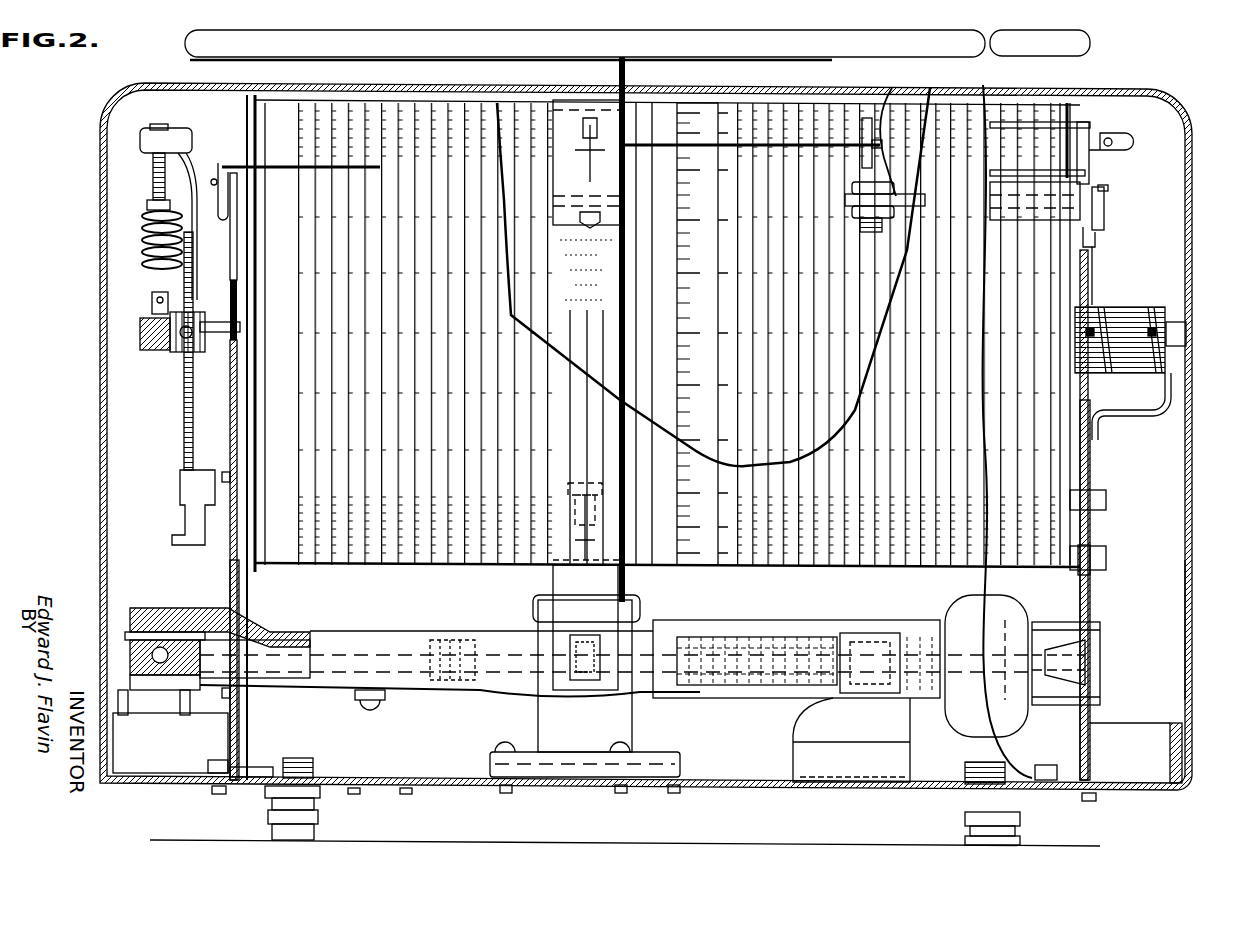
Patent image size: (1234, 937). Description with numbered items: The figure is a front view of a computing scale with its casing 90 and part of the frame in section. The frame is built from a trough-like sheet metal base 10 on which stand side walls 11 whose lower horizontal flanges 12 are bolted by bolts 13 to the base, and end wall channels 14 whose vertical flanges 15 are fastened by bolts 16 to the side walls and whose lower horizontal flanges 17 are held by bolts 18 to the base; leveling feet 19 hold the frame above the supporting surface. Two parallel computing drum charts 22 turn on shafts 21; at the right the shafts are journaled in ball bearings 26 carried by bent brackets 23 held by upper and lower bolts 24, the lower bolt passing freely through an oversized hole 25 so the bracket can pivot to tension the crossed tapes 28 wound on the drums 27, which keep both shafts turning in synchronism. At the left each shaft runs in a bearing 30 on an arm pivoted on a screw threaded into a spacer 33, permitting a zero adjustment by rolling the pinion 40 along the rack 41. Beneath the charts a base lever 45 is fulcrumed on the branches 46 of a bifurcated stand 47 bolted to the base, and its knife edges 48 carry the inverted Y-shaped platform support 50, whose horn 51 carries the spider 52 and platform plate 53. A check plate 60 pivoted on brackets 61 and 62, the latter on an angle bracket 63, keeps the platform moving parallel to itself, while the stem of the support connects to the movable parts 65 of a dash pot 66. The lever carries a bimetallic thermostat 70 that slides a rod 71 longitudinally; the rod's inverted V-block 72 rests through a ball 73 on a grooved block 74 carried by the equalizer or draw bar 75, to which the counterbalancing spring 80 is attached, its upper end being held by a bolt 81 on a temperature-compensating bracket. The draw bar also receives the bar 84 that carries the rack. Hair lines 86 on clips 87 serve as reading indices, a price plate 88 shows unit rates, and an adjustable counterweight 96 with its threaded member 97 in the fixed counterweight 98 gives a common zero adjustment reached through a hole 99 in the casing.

The base 10 is at (140, 790).
The side walls 11 is at (230, 530).
The horizontal flanges 12 is at (208, 770).
The bolts 13 is at (214, 798).
The end wall channels 14 is at (470, 785).
The vertical flanges 15 is at (242, 720).
The bolts 16 is at (224, 480).
The horizontal flanges 17 is at (365, 794).
The bolts 18 is at (406, 794).
The leveling feet 19 is at (268, 830).
The shafts 21 is at (230, 310).
The computing drum charts 22 is at (275, 120).
The bent brackets 23 is at (1133, 414).
The bolts 24 is at (1100, 555).
The hole 25 is at (1095, 572).
The ball bearings 26 is at (1190, 340).
The drums 27 is at (1152, 307).
The tapes 28 is at (1115, 307).
The bearing 30 is at (150, 350).
The spacer 33 is at (212, 352).
The pinion 40 is at (178, 355).
The rack 41 is at (184, 400).
The base lever 45 is at (740, 700).
The branches 46 is at (905, 695).
The bifurcated stand 47 is at (808, 752).
The knife edges 48 is at (580, 700).
The platform support 50 is at (555, 584).
The horn 51 is at (555, 72).
The spider 52 is at (360, 58).
The platform plate 53 is at (900, 56).
The check plate 60 is at (660, 140).
The bracket 61 is at (605, 110).
The bracket 62 is at (885, 147).
The angle bracket 63 is at (932, 100).
The movable parts of dash pot 65 is at (612, 588).
The dash pot 66 is at (632, 726).
The thermostat 70 is at (760, 637).
The rod 71 is at (290, 645).
The inverted V-block 72 is at (130, 620).
The ball 73 is at (130, 662).
The block 74 is at (130, 670).
The equalizer or draw bar 75 is at (130, 645).
The counterbalancing spring 80 is at (155, 265).
The bolt 81 is at (153, 190).
The bar 84 is at (165, 520).
The hair lines 86 is at (260, 166).
The clips 87 is at (220, 212).
The price plate 88 is at (1100, 240).
The casing 90 is at (1183, 625).
The adjustable counterweight 96 is at (1100, 705).
The threaded member 97 is at (1025, 615).
The fixed counterweight 98 is at (962, 722).
The hole 99 is at (1183, 672).